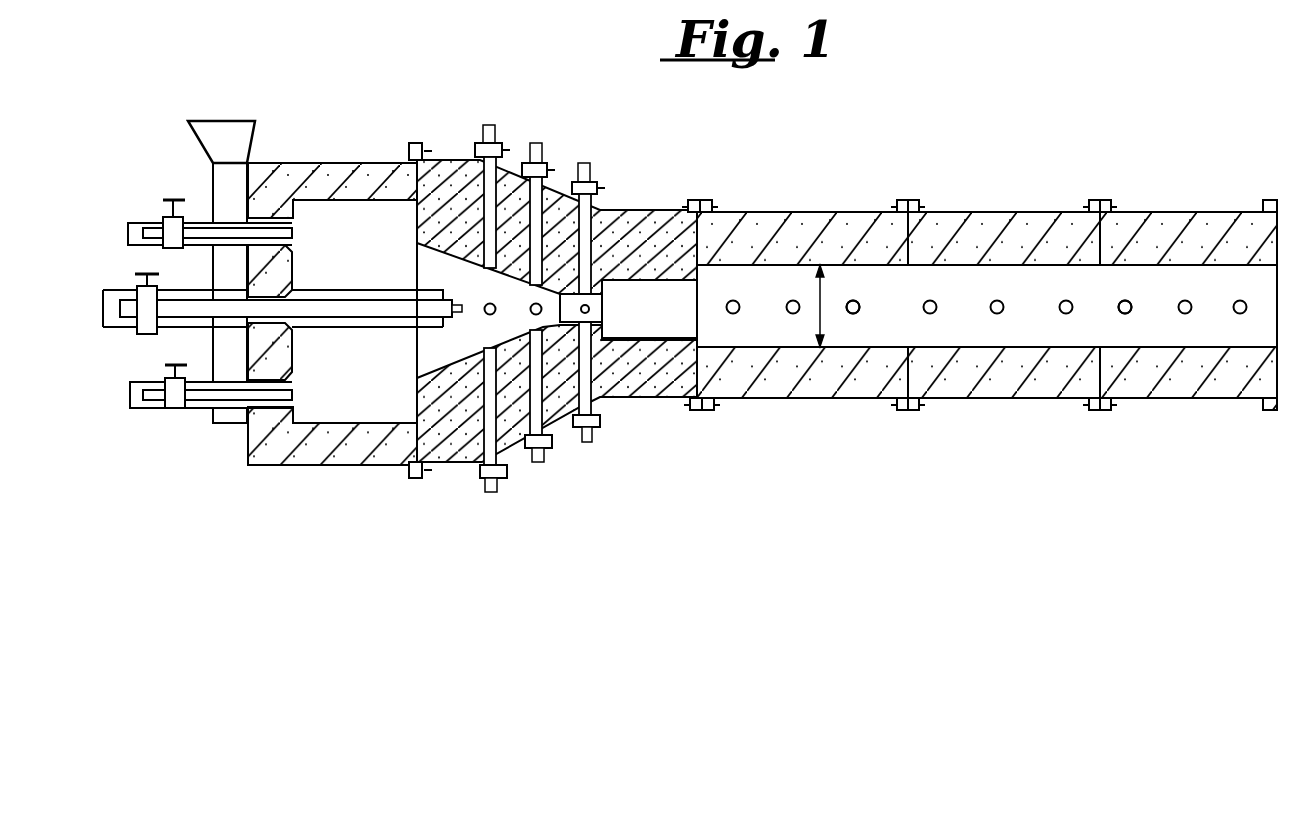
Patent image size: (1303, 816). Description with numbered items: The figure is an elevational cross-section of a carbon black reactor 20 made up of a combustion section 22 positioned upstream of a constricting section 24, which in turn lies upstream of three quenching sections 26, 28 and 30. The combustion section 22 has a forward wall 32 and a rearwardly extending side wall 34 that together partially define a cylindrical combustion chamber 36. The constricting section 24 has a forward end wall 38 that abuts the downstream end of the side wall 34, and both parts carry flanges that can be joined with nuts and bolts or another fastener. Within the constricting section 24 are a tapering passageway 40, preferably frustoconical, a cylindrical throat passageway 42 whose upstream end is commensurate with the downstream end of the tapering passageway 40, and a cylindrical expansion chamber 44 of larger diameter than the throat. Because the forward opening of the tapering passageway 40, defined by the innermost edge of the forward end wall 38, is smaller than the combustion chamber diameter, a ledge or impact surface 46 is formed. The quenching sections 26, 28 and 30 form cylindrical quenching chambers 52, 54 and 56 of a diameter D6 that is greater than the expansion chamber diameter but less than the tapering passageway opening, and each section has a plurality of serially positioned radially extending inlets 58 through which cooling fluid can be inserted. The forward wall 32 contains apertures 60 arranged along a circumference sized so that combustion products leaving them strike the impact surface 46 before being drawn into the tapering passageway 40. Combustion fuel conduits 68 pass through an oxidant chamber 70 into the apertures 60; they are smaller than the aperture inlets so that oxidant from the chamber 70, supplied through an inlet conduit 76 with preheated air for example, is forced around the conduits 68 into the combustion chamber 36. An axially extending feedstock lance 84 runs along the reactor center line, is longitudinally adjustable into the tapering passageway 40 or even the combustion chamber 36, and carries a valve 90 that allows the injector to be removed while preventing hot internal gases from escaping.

The reactor 20 is at (682, 309).
The combustion section 22 is at (328, 448).
The constricting section 24 is at (452, 167).
The quenching section 26 is at (790, 212).
The quenching section 28 is at (1010, 212).
The quenching section 30 is at (1190, 212).
The forward wall 32 is at (297, 350).
The side wall 34 is at (305, 163).
The combustion chamber 36 is at (393, 280).
The forward end wall 38 is at (418, 442).
The tapering passageway 40 is at (453, 340).
The throat passageway 42 is at (595, 313).
The expansion chamber 44 is at (669, 323).
The impact surface 46 is at (407, 230).
The quenching chamber 52 is at (870, 324).
The quenching chamber 54 is at (1027, 316).
The quenching chamber 56 is at (1154, 316).
The radially extending inlets 58 is at (793, 314).
The apertures 60 is at (292, 240).
The combustion fuel conduits 68 is at (234, 297).
The oxidant chamber 70 is at (230, 370).
The inlet conduit 76 is at (224, 143).
The axial feedstock lance 84 is at (313, 312).
The valve 90 is at (148, 328).
The diameter of quenching chambers D6 is at (823, 303).